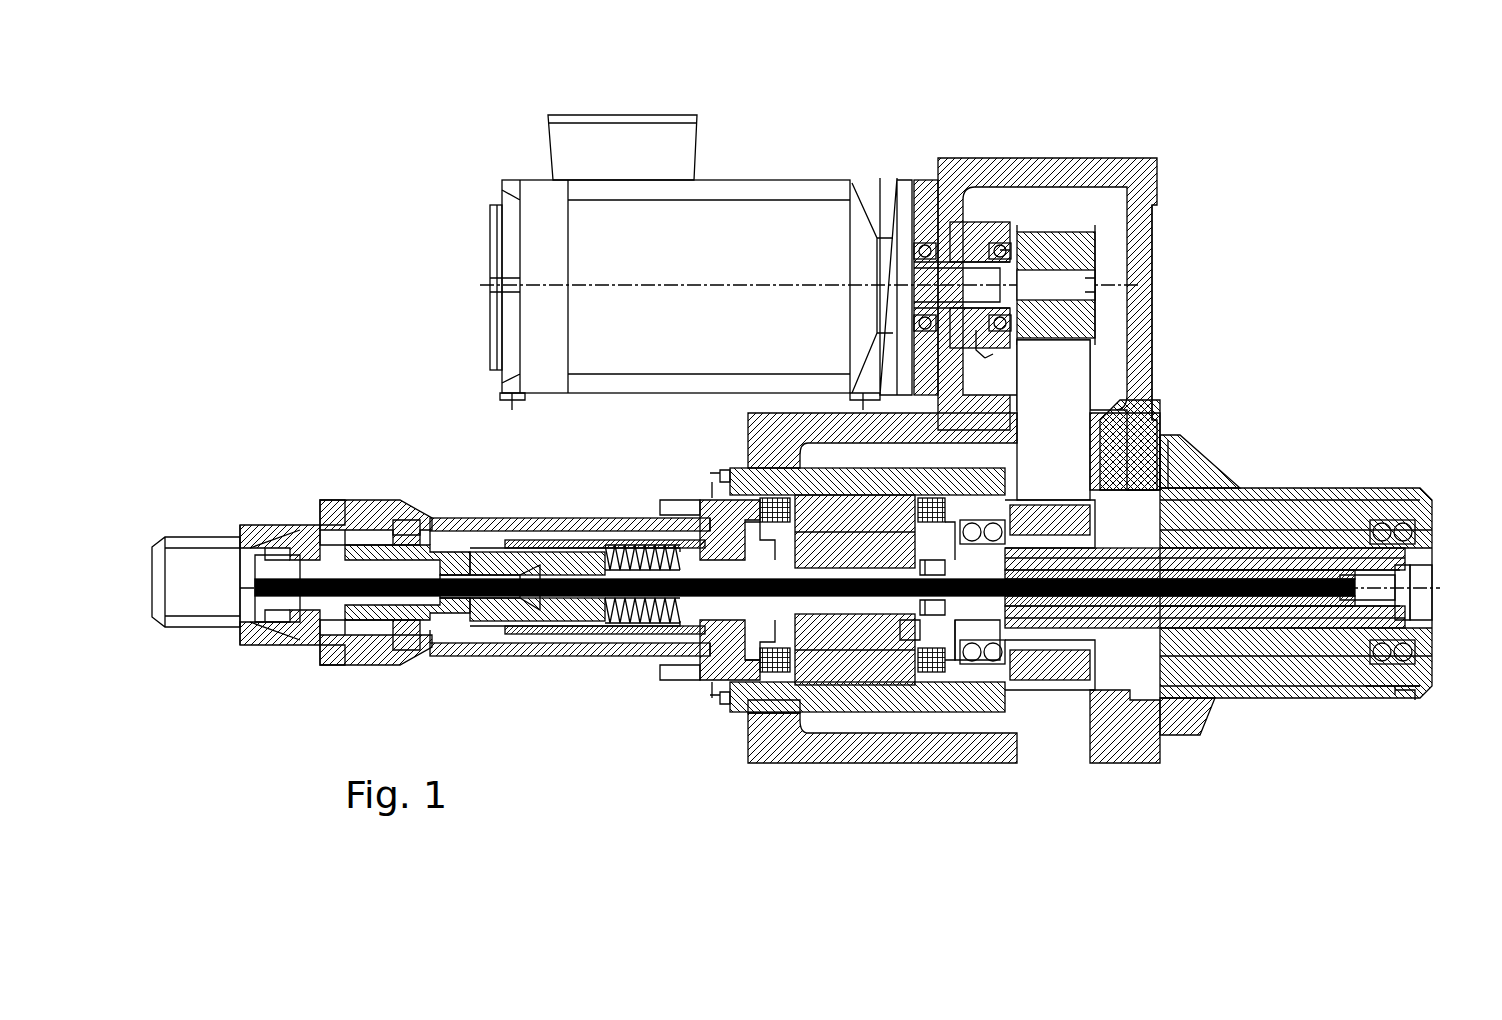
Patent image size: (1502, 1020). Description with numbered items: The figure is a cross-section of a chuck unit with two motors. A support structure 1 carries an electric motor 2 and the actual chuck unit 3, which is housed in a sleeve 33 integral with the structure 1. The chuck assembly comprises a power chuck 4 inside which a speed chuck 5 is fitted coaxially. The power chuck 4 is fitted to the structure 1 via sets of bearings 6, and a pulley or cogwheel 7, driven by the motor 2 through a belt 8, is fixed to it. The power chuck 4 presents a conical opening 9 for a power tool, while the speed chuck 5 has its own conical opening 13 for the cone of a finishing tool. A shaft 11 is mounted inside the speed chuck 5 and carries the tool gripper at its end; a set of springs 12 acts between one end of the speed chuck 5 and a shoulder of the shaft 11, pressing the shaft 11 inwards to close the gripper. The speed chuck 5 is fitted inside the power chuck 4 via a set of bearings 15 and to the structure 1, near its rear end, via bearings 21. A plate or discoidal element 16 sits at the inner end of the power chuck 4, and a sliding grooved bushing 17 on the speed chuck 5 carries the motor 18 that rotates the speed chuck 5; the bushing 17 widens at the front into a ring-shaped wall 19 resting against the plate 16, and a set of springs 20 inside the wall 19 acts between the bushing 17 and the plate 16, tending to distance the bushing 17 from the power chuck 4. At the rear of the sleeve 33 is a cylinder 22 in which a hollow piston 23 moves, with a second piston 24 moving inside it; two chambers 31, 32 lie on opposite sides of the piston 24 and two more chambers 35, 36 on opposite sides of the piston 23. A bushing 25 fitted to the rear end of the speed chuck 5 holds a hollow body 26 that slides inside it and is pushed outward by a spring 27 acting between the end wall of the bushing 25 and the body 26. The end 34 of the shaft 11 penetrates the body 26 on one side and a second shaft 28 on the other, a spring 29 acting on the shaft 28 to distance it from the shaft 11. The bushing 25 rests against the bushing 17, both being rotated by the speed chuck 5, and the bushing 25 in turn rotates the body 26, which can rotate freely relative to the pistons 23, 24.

The support structure 1 is at (1158, 162).
The electric motor 2 is at (712, 215).
The chuck unit 3 is at (1318, 378).
The power chuck 4 is at (1280, 530).
The speed chuck 5 is at (1330, 665).
The bearings 6 is at (1003, 520).
The pulley or cogwheel 7 is at (1130, 455).
The belt 8 is at (1082, 380).
The conical opening 9 is at (1430, 565).
The shaft 11 is at (1205, 660).
The set of springs 12 is at (1270, 640).
The conical opening 13 is at (1430, 620).
The set of bearings 15 is at (1092, 690).
The plate or discoidal element 16 is at (965, 640).
The sliding grooved bushing 17 is at (840, 555).
The motor 18 is at (760, 450).
The ring-shaped wall 19 is at (930, 578).
The set of springs 20 is at (910, 650).
The bearings 21 is at (730, 665).
The cylinder 22 is at (580, 518).
The piston 23 is at (360, 518).
The second piston 24 is at (280, 525).
The bushing 25 is at (535, 545).
The body 26 is at (575, 625).
The spring 27 is at (648, 548).
The second shaft 28 is at (515, 600).
The spring 29 is at (430, 518).
The chamber 31 is at (300, 630).
The chamber 32 is at (240, 540).
The sleeve 33 is at (750, 705).
The end of shaft 34 is at (1365, 700).
The chamber 35 is at (340, 665).
The chamber 36 is at (410, 652).